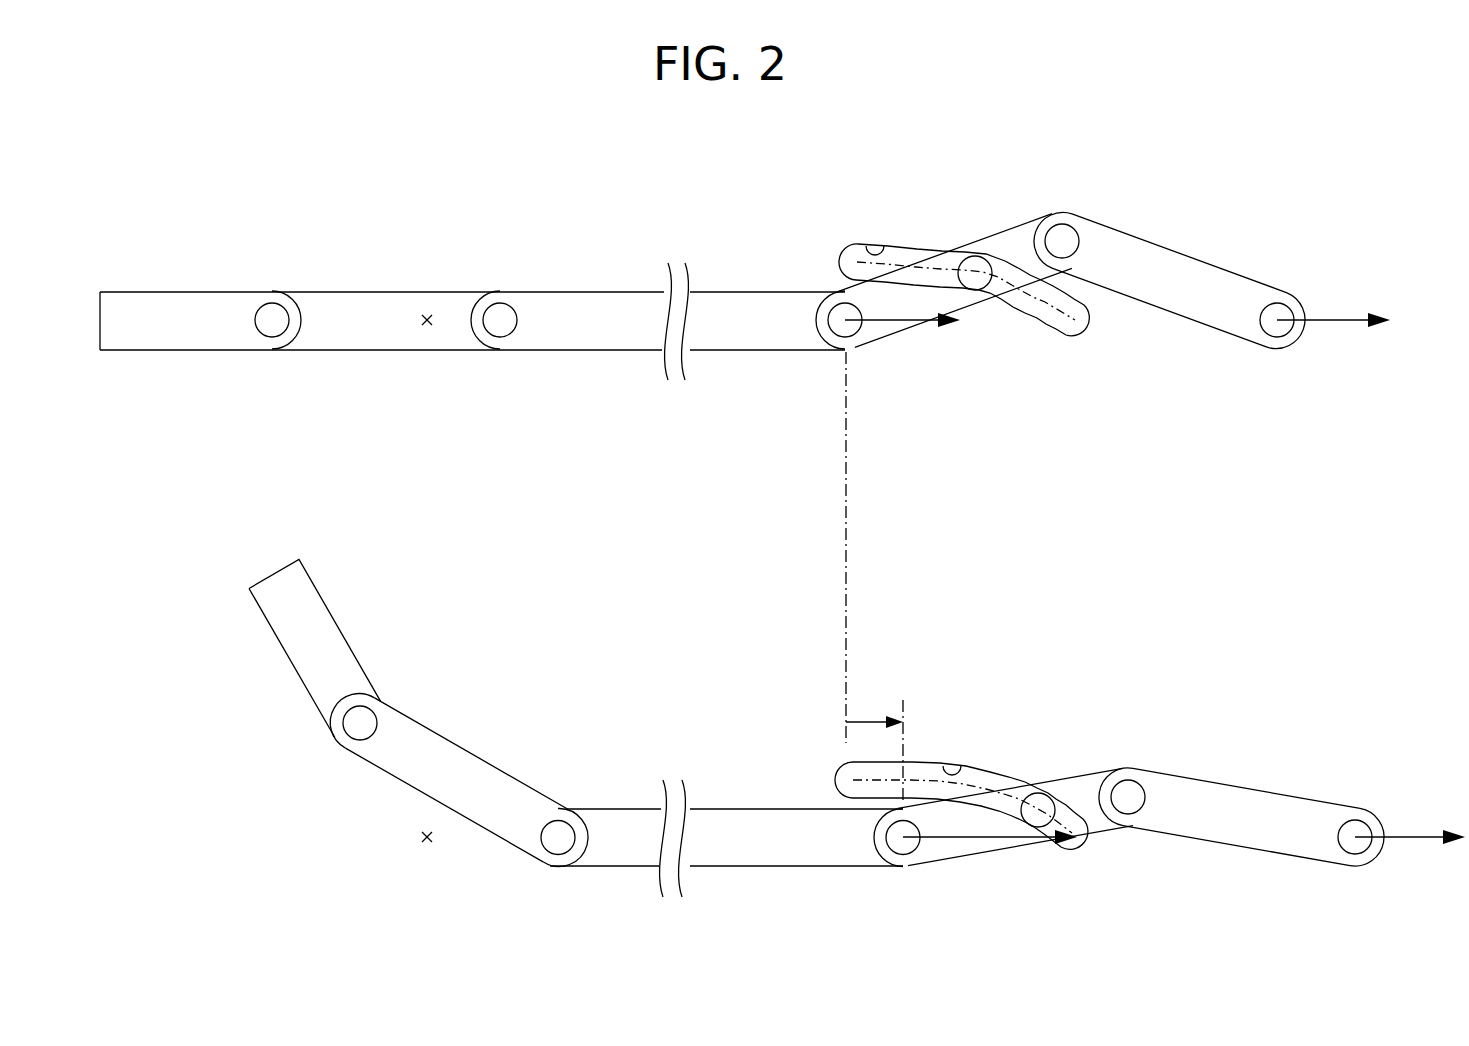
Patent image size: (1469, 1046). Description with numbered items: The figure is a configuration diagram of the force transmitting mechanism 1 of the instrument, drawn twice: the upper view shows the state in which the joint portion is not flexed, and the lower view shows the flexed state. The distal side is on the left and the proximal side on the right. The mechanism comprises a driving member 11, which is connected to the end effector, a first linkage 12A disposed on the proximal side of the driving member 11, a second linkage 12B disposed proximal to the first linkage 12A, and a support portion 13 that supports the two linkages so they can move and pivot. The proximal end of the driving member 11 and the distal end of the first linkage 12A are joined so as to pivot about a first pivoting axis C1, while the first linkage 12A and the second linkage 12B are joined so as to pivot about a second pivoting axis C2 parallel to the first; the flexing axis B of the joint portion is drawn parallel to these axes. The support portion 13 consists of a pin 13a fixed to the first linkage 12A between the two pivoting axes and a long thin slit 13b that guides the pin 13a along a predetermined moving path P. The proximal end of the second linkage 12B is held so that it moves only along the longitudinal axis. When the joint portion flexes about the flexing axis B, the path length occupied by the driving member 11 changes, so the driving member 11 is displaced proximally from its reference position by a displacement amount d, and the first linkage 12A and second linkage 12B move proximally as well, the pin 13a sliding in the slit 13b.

The force transmitting mechanism 1 is at (318, 124).
The driving member 11 is at (100, 237).
The first linkage 12A is at (963, 302).
The second linkage 12B is at (1183, 302).
The support portion 13 is at (835, 158).
The pin 13a is at (977, 256).
The slit 13b is at (868, 245).
The first pivoting axis C1 is at (858, 332).
The second pivoting axis C2 is at (1064, 224).
The moving path P is at (1057, 330).
The flexing axis B is at (427, 324).
The displacement amount d is at (874, 577).